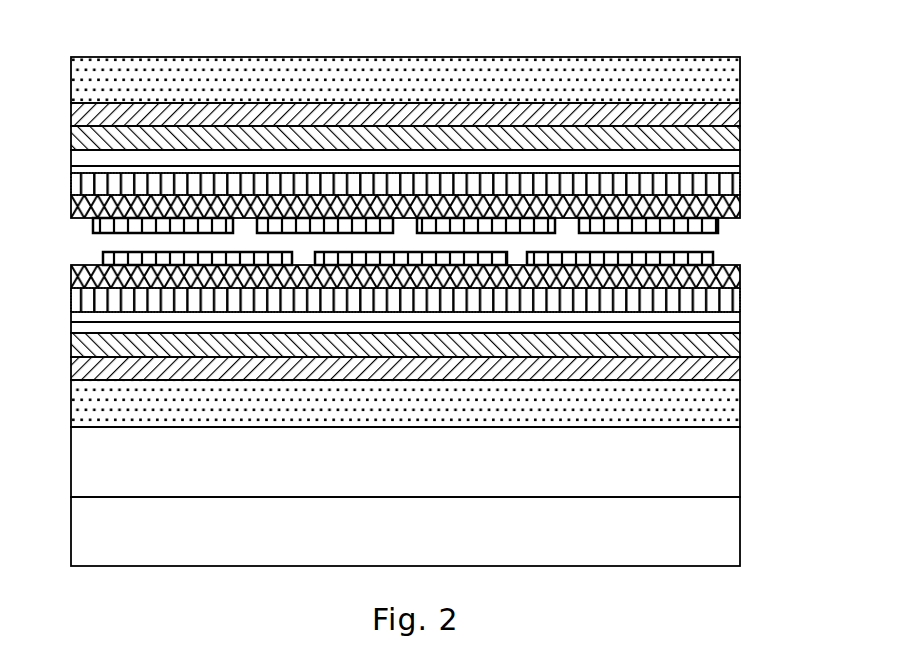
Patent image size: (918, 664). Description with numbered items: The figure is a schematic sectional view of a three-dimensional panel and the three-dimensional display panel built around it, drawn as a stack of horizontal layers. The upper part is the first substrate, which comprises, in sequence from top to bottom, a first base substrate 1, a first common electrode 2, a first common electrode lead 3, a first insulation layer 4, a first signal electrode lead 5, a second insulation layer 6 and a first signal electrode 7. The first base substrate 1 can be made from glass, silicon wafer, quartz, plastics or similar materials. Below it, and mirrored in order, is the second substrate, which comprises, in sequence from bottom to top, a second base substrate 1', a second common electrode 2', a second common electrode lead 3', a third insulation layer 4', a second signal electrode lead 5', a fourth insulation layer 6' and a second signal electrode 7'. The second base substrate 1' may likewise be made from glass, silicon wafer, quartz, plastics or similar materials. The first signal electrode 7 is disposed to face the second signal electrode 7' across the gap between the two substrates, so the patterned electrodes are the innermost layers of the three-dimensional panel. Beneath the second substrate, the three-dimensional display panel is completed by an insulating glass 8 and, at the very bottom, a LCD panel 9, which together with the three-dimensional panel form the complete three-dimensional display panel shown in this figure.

The first base substrate 1 is at (429, 59).
The first common electrode 2 is at (429, 92).
The first common electrode lead 3 is at (429, 114).
The first insulation layer 4 is at (429, 137).
The first signal electrode lead 5 is at (429, 158).
The second insulation layer 6 is at (429, 180).
The first signal electrode 7 is at (449, 216).
The second signal electrode 7' is at (455, 247).
The fourth insulation layer 6' is at (441, 267).
The second signal electrode lead 5' is at (441, 289).
The third insulation layer 4' is at (441, 312).
The second common electrode lead 3' is at (441, 334).
The second common electrode 2' is at (441, 360).
The second base substrate 1' is at (441, 398).
The insulating glass 8 is at (723, 463).
The LCD panel 9 is at (723, 533).